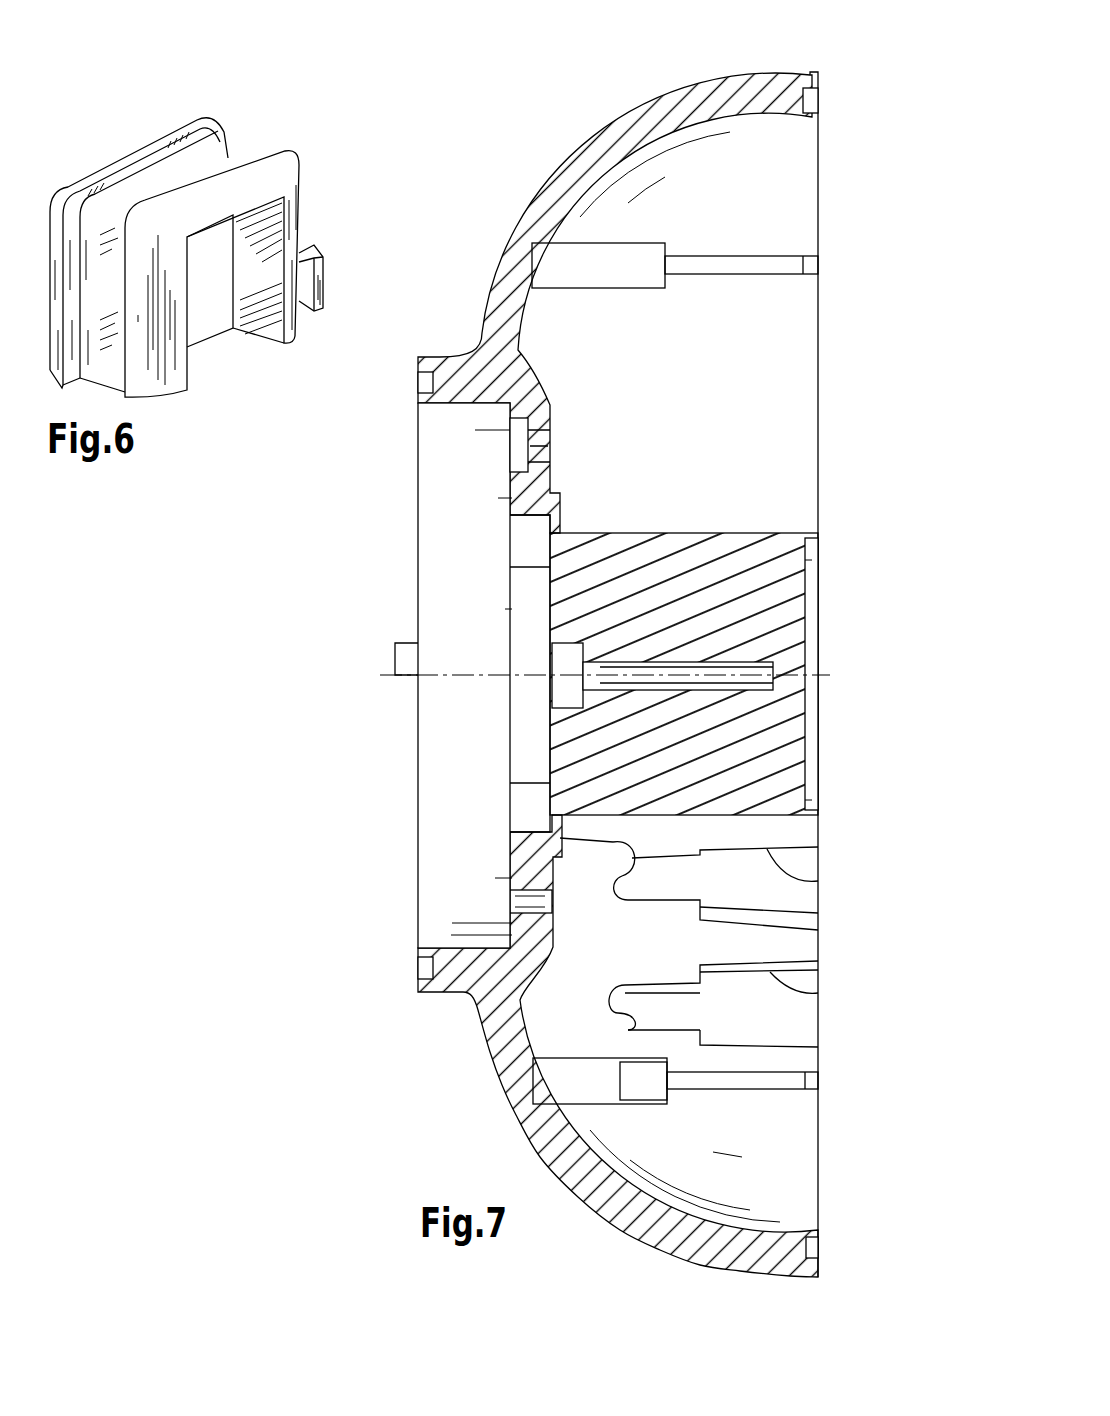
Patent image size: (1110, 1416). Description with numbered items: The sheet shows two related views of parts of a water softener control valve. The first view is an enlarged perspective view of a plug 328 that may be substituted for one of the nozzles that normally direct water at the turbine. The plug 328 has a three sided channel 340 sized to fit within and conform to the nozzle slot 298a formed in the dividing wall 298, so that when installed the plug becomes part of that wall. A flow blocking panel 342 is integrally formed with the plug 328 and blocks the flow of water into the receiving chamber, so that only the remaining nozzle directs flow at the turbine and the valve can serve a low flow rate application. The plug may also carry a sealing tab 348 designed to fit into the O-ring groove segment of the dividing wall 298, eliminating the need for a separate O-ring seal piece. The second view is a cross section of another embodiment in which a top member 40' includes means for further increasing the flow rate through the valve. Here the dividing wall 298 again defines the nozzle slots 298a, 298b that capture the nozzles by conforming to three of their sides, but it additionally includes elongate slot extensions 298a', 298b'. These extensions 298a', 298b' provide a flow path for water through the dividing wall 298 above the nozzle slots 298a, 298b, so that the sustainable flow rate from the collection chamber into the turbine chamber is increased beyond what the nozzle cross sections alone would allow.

In FIG. 6, the three sided channel 340 is at (155, 180).
In FIG. 6, the plug 328 is at (254, 130).
In FIG. 6, the flow blocking panel 342 is at (200, 297).
In FIG. 6, the sealing tab 348 is at (311, 253).
In FIG. 7, the top member 40' is at (618, 644).
In FIG. 7, the dividing wall 298 is at (774, 1144).
In FIG. 7, the elongate slot extension 298b' is at (458, 829).
In FIG. 7, the slot 298b is at (757, 879).
In FIG. 7, the elongate slot extension 298a' is at (530, 1062).
In FIG. 7, the slot 298a is at (752, 1004).